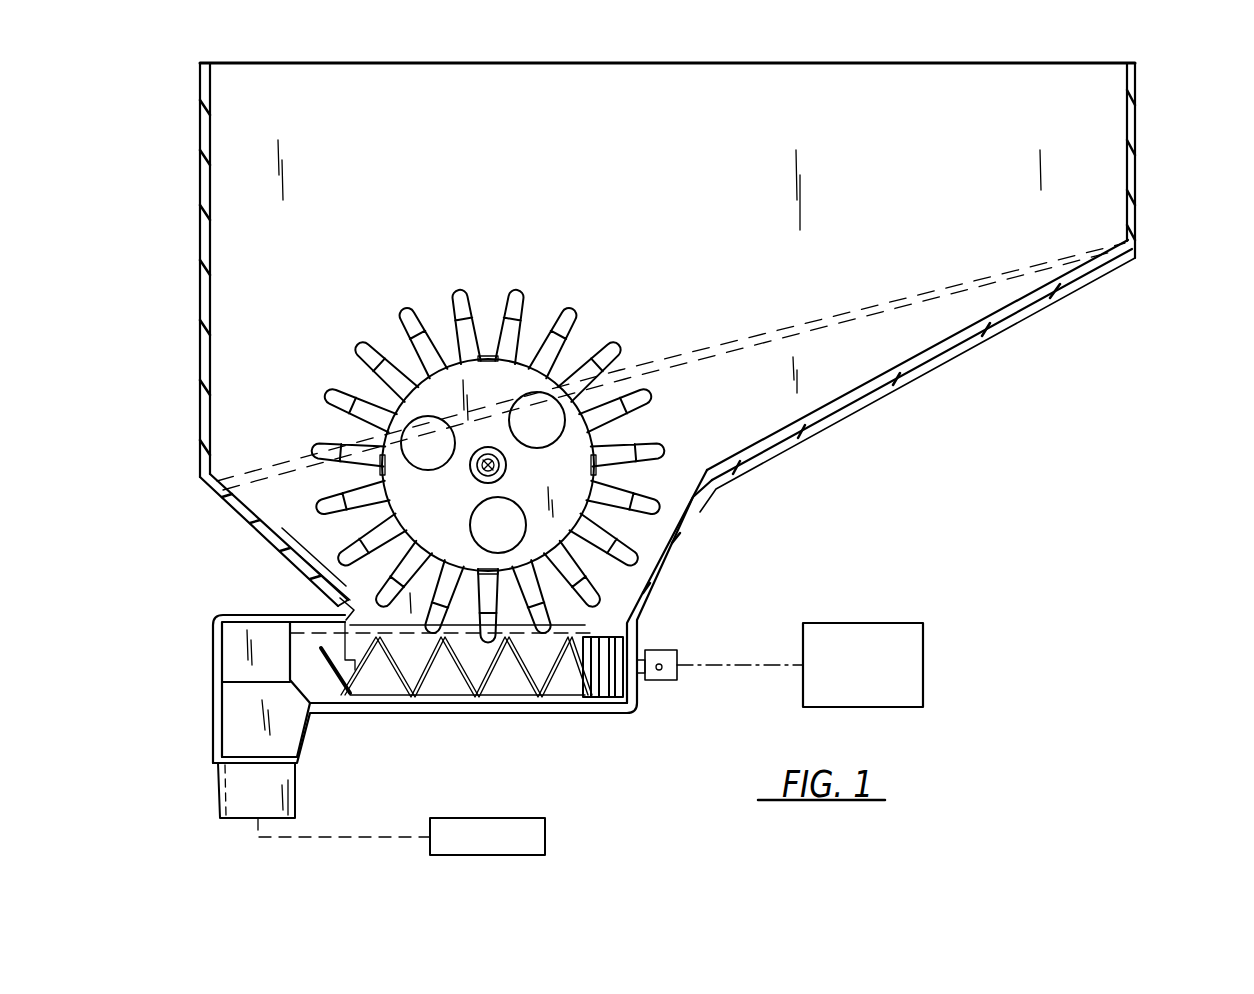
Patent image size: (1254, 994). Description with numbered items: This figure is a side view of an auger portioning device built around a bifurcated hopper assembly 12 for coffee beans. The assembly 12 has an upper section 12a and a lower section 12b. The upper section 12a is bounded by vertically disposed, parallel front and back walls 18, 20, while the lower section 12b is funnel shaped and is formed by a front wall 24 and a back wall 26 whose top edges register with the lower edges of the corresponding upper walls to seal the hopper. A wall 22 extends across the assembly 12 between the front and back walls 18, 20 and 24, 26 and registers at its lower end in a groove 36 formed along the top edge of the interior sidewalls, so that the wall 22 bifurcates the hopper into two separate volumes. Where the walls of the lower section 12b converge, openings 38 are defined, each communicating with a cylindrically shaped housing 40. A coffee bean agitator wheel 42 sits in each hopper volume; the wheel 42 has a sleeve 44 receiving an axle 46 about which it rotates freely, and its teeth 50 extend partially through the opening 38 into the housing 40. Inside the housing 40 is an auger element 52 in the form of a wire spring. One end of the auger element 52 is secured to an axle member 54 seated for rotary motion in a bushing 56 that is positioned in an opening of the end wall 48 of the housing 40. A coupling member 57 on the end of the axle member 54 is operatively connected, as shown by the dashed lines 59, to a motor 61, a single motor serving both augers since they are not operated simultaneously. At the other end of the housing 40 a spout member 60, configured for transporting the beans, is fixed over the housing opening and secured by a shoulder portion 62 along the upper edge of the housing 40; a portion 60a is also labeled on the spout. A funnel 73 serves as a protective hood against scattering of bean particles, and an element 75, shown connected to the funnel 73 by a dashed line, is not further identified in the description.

The bifurcated hopper assembly 12 is at (900, 38).
The upper section 12a is at (1100, 100).
The lower section 12b is at (897, 371).
The front wall 18 is at (200, 150).
The back wall 20 is at (1137, 162).
The wall 22 is at (815, 172).
The front wall 24 is at (243, 516).
The back wall 26 is at (815, 437).
The groove 36 is at (850, 386).
The openings 38 is at (518, 698).
The housing 40 is at (566, 708).
The coffee bean agitator wheels 42 is at (628, 340).
The sleeve 44 is at (507, 468).
The axle 46 is at (500, 461).
The end wall 48 is at (628, 620).
The teeth 50 is at (580, 310).
The auger element 52 is at (440, 708).
The axle member 54 is at (628, 696).
The bushing 56 is at (633, 643).
The coupling member 57 is at (656, 651).
The dashed lines 59 is at (737, 667).
The spout member 60 is at (293, 612).
The opening lip 60a is at (297, 596).
The motor 61 is at (923, 623).
The shoulder portion 62 is at (283, 553).
The funnel 73 is at (218, 758).
The controller 75 is at (545, 832).